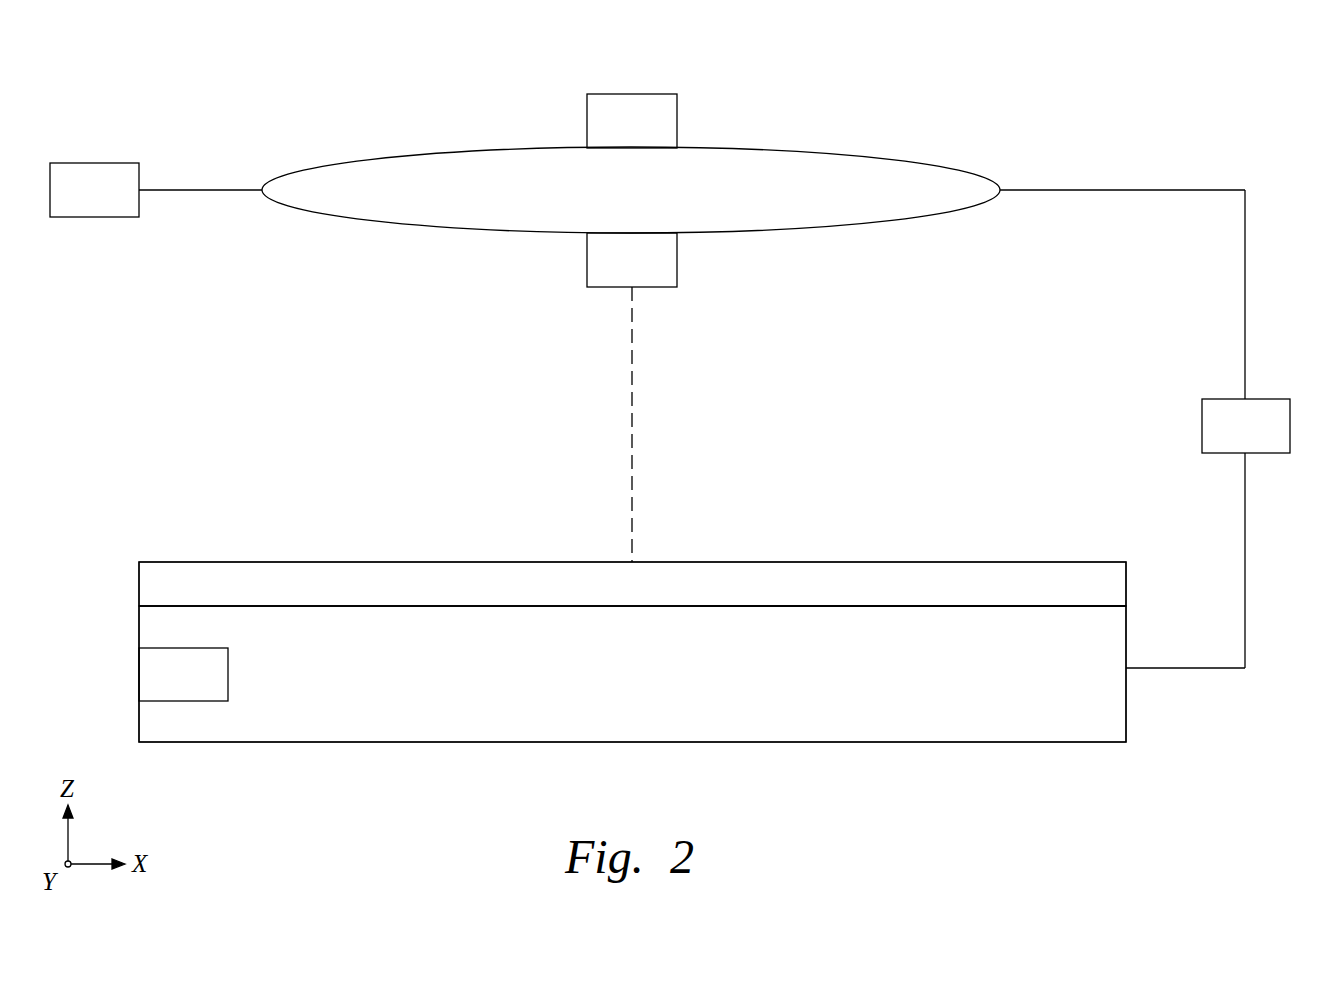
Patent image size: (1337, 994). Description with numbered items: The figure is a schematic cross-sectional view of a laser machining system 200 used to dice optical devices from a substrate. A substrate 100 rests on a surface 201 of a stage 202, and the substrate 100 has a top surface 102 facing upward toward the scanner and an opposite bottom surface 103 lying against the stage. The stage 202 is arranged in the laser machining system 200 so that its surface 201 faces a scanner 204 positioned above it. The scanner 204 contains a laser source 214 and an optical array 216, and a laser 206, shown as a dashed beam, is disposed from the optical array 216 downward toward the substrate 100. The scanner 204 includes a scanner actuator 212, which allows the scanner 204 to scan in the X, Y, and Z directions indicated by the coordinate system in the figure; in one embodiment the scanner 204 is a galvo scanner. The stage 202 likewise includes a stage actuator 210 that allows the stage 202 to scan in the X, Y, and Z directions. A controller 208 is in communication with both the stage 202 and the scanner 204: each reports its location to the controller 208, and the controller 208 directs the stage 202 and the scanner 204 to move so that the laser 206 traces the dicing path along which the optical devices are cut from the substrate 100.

The laser machining system 200 is at (1236, 105).
The scanner actuator 212 is at (113, 203).
The scanner 204 is at (650, 203).
The laser source 214 is at (651, 134).
The optical array 216 is at (651, 272).
The controller 208 is at (1265, 438).
The laser 206 is at (633, 415).
The substrate 100 is at (914, 548).
The top surface 102 is at (158, 562).
The bottom surface 103 is at (158, 606).
The surface 201 is at (1104, 606).
The stage 202 is at (650, 673).
The stage actuator 210 is at (201, 687).